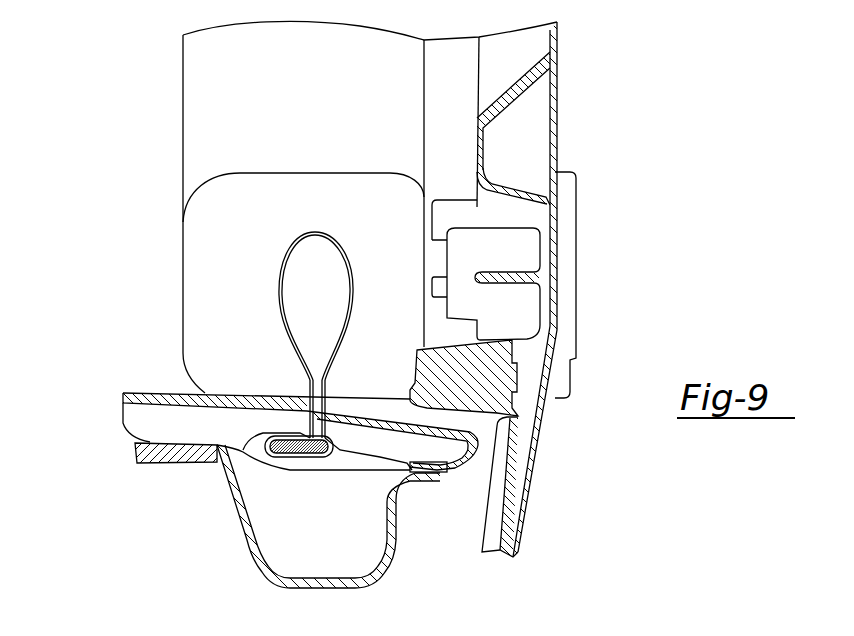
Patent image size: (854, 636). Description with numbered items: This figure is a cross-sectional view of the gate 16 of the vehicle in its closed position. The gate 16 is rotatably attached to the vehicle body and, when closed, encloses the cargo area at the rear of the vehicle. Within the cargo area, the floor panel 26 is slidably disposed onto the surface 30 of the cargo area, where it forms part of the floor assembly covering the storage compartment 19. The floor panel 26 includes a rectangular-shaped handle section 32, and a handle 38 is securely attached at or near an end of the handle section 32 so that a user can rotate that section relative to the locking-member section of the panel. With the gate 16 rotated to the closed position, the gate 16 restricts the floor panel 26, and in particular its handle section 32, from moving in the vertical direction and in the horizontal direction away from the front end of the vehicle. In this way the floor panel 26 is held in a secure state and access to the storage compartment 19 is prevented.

The gate 16 is at (552, 445).
The storage compartment 19 is at (273, 543).
The floor panel 26 is at (460, 472).
The surface 30 is at (130, 427).
The handle section 32 is at (142, 397).
The handle 38 is at (330, 240).